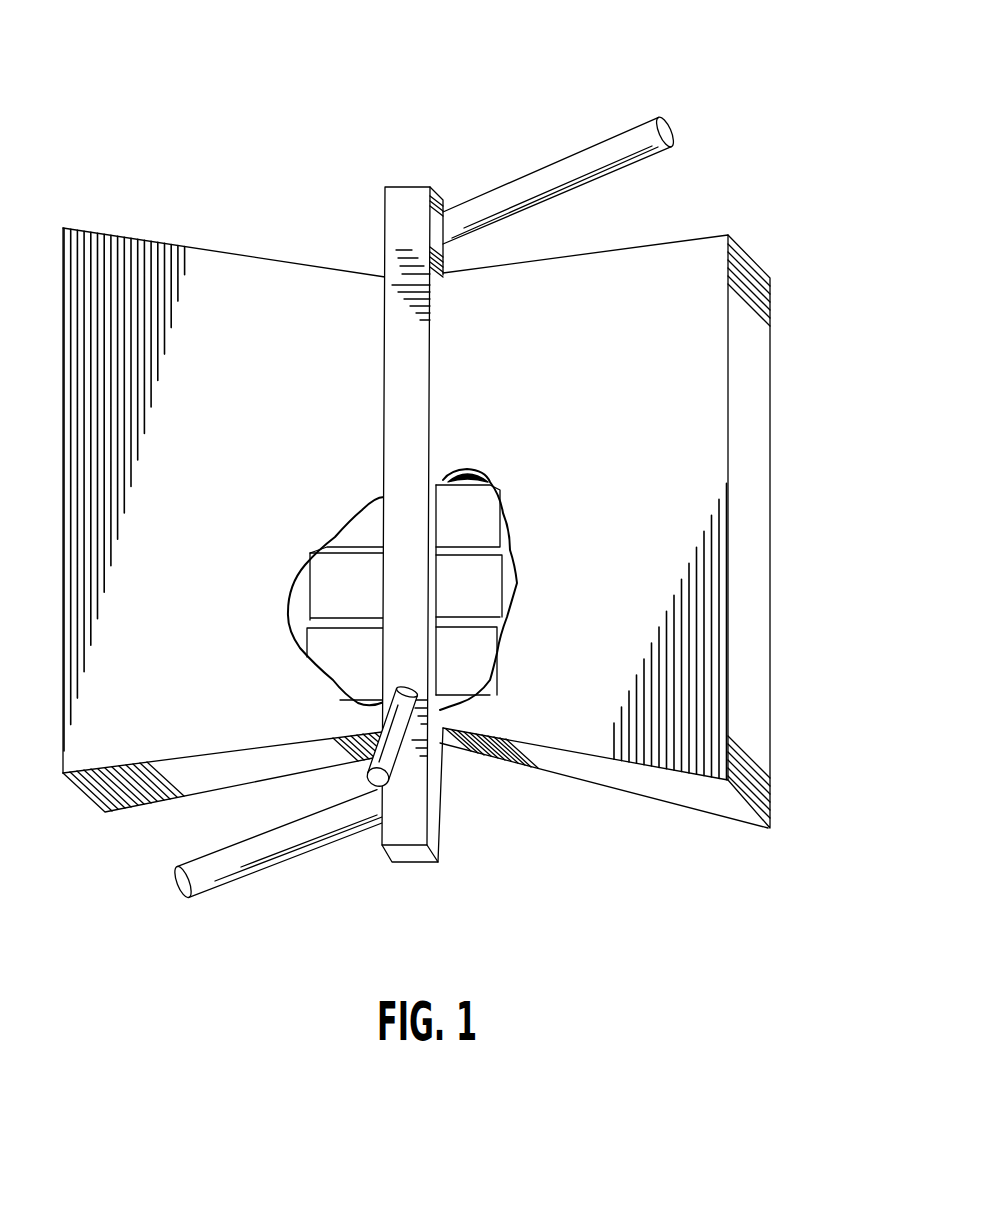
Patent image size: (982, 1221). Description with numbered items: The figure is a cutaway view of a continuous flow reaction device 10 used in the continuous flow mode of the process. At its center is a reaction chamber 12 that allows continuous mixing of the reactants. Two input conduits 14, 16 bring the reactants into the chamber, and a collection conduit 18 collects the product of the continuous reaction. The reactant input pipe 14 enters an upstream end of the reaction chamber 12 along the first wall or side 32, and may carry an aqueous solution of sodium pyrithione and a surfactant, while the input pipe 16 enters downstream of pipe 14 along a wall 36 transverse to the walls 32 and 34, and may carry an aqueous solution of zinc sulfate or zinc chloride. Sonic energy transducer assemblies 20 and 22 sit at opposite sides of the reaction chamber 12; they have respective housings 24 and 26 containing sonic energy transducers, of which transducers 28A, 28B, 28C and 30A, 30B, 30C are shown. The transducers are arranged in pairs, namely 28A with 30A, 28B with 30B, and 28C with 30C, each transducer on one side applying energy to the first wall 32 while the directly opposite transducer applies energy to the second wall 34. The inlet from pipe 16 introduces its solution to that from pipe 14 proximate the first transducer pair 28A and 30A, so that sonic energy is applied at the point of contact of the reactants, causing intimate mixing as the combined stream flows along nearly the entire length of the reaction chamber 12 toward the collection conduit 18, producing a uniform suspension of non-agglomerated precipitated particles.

The continuous flow reaction device 10 is at (568, 119).
The reaction chamber 12 is at (415, 217).
The input conduit 14 is at (263, 857).
The input conduit 16 is at (368, 757).
The collection conduit 18 is at (590, 172).
The sonic energy transducer assembly 20 is at (175, 250).
The sonic energy transducer assembly 22 is at (753, 372).
The housing 24 is at (249, 265).
The housing 26 is at (710, 515).
The sonic energy transducer 28A is at (327, 652).
The sonic energy transducer 28B is at (328, 587).
The sonic energy transducer 28C is at (353, 524).
The sonic energy transducer 30A is at (480, 668).
The sonic energy transducer 30B is at (487, 592).
The sonic energy transducer 30C is at (488, 518).
The first wall 32 is at (387, 860).
The second wall 34 is at (440, 833).
The wall 36 is at (400, 421).